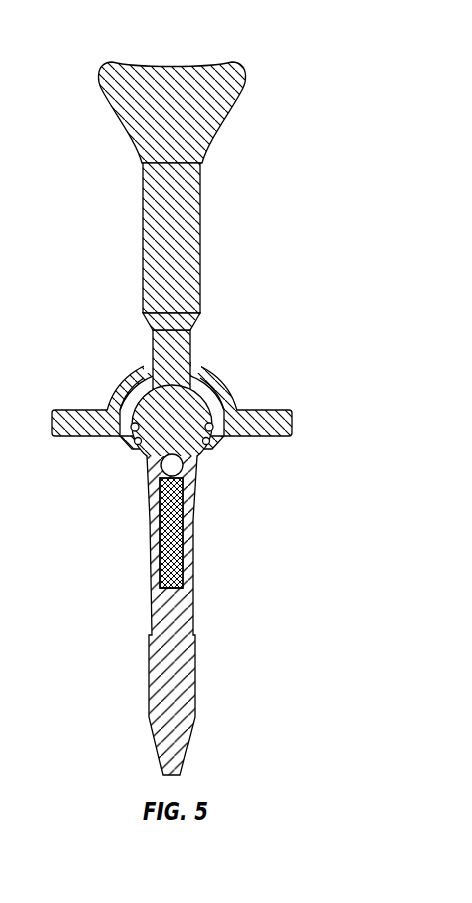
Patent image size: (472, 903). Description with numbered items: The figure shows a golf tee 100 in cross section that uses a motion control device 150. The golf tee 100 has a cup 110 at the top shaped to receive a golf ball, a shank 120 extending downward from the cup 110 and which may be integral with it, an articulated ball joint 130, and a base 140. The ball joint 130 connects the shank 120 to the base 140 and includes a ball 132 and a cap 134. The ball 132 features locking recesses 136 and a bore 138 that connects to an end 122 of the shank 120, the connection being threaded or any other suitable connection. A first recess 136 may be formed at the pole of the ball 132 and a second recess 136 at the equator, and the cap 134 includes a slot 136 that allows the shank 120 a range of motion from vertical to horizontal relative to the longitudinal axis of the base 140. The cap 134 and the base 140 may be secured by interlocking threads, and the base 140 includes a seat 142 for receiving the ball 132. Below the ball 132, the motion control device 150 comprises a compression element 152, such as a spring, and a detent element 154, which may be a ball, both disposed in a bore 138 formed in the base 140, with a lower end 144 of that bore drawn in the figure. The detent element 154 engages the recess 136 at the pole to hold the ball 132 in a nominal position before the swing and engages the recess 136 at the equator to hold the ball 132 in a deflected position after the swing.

The golf tee 100 is at (247, 53).
The cup 110 is at (227, 132).
The shank 120 is at (200, 238).
The end of the shank 122 is at (192, 352).
The articulated ball joint 130 is at (232, 392).
The ball 132 is at (205, 443).
The cap 134 is at (213, 397).
The locking recess 136 is at (137, 428).
The bore 138 is at (140, 392).
The base 140 is at (201, 615).
The seat 142 is at (140, 446).
The bottom of channel 144 is at (158, 587).
The motion control device 150 is at (177, 546).
The compression element 152 is at (185, 520).
The detent element 154 is at (178, 470).